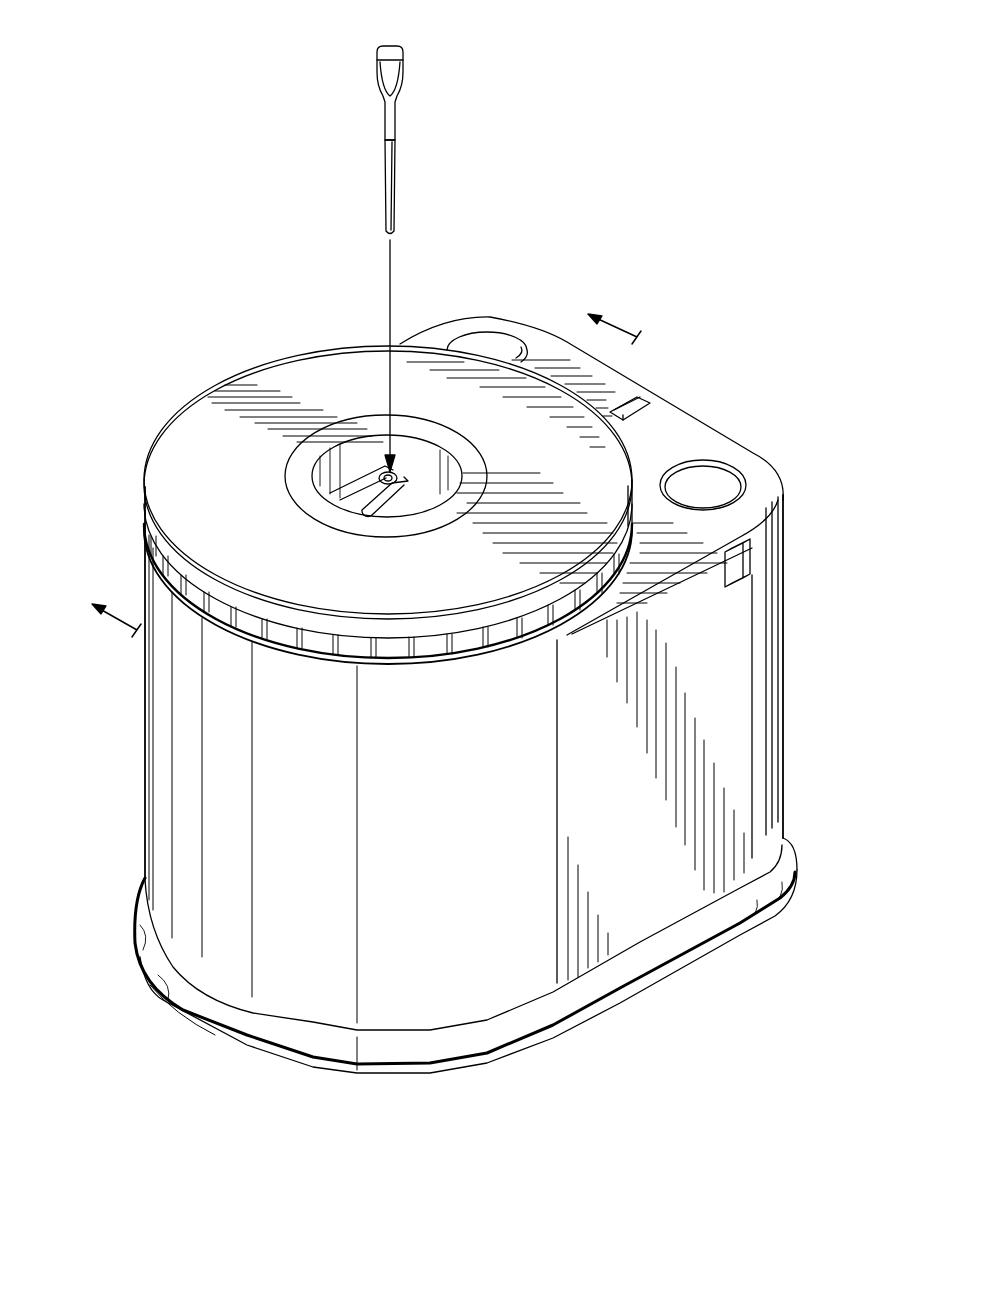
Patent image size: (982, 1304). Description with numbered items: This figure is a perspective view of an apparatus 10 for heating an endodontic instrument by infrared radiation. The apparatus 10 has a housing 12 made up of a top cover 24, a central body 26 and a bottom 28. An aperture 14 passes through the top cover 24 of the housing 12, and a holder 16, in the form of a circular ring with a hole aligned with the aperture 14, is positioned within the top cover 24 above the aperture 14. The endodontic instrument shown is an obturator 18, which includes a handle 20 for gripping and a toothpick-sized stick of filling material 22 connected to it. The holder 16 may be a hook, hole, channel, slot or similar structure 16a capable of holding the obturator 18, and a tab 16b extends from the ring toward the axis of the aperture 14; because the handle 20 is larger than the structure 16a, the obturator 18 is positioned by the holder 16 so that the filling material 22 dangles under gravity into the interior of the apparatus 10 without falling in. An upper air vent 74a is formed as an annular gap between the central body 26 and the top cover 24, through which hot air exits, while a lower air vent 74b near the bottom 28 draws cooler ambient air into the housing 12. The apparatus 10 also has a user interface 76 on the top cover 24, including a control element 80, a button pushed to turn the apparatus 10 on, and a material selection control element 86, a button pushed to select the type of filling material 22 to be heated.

The apparatus 10 is at (136, 212).
The housing 12 is at (792, 645).
The aperture 14 is at (376, 452).
The holder 16 is at (341, 477).
The structure 16a is at (395, 470).
The tab 16b is at (386, 496).
The obturator 18 is at (412, 63).
The handle 20 is at (377, 70).
The filling material 22 is at (386, 160).
The top cover 24 is at (180, 455).
The central body 26 is at (155, 787).
The bottom 28 is at (632, 985).
The upper air vent 74a is at (341, 650).
The lower air vent 74b is at (205, 1002).
The user interface 76 is at (666, 416).
The control element 80 is at (722, 473).
The material selection control element 86 is at (488, 343).